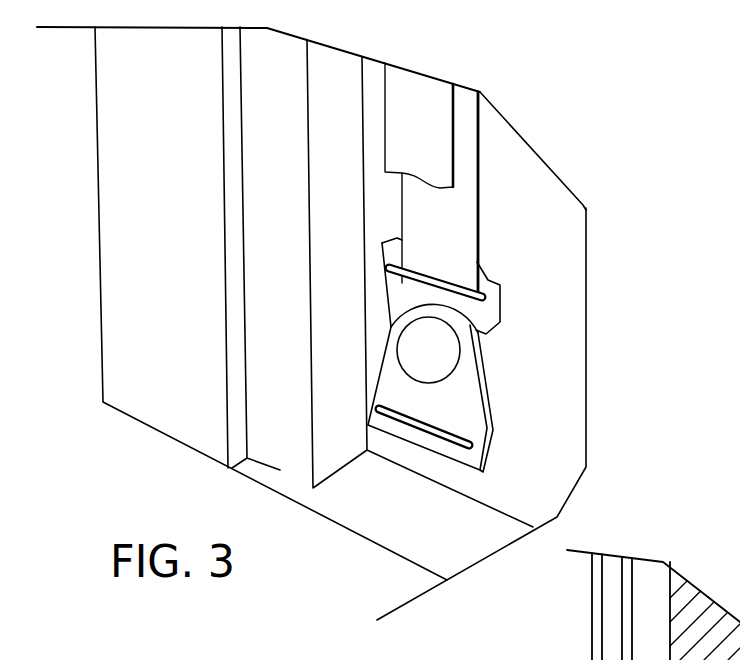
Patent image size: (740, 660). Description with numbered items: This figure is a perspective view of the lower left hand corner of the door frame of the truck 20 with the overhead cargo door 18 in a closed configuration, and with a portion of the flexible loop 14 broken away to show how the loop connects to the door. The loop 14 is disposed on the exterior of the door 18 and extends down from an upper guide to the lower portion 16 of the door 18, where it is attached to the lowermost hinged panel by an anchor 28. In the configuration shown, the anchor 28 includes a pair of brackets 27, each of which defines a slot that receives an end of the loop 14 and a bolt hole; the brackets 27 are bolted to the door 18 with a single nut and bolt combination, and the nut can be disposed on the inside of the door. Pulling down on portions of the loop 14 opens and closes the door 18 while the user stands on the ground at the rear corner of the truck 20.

The flexible loop 14 is at (440, 125).
The lower portion 16 is at (562, 403).
The overhead cargo door 18 is at (552, 218).
The truck 20 is at (270, 278).
The brackets 27 is at (500, 294).
The anchor 28 is at (509, 350).